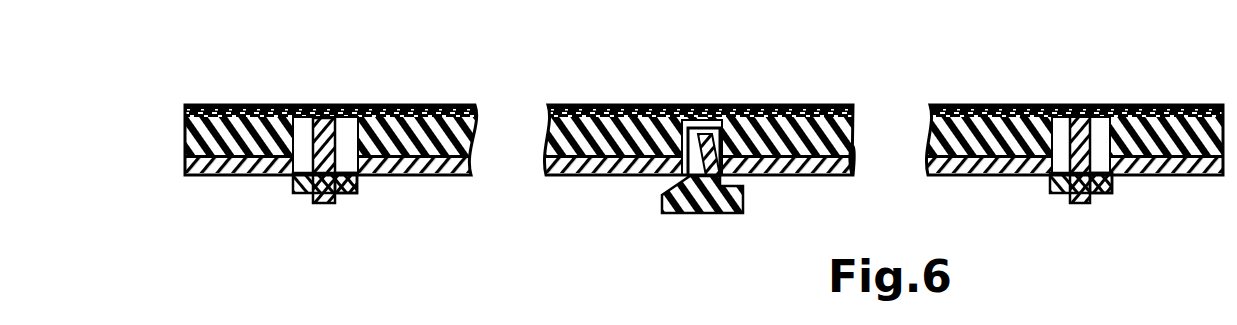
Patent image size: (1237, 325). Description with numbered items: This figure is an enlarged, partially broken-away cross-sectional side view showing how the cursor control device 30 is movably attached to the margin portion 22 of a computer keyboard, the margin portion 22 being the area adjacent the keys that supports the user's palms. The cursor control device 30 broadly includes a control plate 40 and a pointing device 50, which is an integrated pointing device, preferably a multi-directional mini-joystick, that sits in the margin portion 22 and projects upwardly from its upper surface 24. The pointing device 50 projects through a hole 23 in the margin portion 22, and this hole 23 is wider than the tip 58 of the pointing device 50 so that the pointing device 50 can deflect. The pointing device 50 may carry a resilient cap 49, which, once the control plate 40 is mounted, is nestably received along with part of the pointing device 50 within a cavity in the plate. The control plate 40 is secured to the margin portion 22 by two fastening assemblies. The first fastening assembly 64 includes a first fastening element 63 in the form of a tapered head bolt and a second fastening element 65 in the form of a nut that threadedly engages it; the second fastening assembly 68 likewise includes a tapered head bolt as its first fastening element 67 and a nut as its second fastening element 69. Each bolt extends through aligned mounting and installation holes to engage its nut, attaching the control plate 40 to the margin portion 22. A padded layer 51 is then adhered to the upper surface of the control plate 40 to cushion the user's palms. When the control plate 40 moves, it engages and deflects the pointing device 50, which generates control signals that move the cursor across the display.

The cursor control device 30 is at (536, 146).
The control plate 40 is at (476, 123).
The padded layer 51 is at (620, 106).
The resilient cap 49 is at (713, 107).
The margin portion 22 is at (568, 165).
The hole 23 is at (685, 172).
The pointing device 50 is at (699, 199).
The tip 58 is at (745, 189).
The upper surface 24 is at (930, 138).
The second fastening assembly 68 is at (312, 197).
The first fastening element 67 is at (320, 206).
The second fastening element 69 is at (349, 194).
The first fastening assembly 64 is at (1078, 178).
The first fastening element 63 is at (1086, 204).
The second fastening element 65 is at (1108, 185).